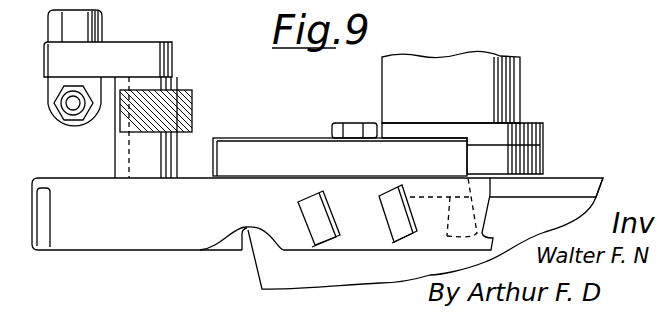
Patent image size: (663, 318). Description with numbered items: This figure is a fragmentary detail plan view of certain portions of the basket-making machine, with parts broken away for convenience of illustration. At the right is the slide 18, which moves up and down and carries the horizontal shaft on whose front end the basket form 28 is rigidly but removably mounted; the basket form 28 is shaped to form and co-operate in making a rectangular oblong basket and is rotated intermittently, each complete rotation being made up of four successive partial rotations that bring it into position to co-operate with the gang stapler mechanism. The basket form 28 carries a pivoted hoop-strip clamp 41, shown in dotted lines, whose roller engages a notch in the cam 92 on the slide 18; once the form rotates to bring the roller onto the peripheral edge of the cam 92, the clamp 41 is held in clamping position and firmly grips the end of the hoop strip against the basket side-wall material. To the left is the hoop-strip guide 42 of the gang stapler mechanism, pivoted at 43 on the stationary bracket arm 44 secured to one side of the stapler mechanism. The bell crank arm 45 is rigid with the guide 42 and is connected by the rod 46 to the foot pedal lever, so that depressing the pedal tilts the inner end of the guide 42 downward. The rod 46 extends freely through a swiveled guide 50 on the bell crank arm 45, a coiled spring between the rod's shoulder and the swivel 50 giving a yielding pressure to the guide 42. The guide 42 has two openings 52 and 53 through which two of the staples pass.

The slide 18 is at (521, 82).
The basket form 28 is at (567, 208).
The hoop-strip clamp 41 is at (533, 230).
The hoop-strip guide 42 is at (203, 227).
The pivot 43 is at (129, 168).
The stationary bracket arm 44 is at (238, 90).
The bell crank arm 45 is at (112, 56).
The rod 46 is at (66, 104).
The swiveled guide 50 is at (61, 128).
The opening 52 is at (320, 224).
The opening 53 is at (397, 223).
The cam 92 is at (545, 156).